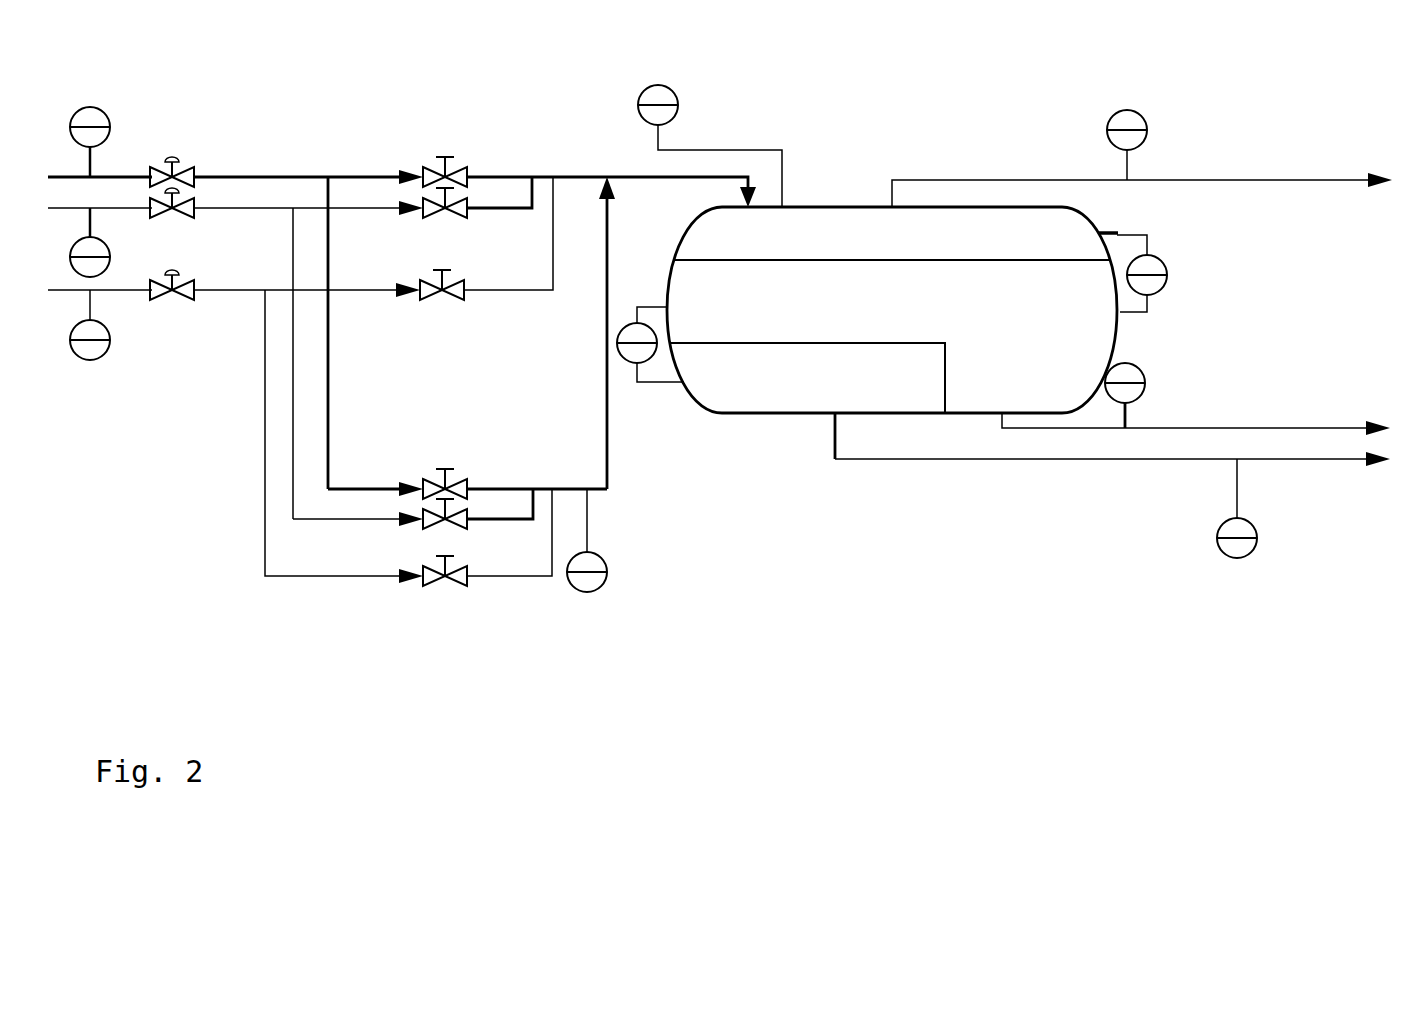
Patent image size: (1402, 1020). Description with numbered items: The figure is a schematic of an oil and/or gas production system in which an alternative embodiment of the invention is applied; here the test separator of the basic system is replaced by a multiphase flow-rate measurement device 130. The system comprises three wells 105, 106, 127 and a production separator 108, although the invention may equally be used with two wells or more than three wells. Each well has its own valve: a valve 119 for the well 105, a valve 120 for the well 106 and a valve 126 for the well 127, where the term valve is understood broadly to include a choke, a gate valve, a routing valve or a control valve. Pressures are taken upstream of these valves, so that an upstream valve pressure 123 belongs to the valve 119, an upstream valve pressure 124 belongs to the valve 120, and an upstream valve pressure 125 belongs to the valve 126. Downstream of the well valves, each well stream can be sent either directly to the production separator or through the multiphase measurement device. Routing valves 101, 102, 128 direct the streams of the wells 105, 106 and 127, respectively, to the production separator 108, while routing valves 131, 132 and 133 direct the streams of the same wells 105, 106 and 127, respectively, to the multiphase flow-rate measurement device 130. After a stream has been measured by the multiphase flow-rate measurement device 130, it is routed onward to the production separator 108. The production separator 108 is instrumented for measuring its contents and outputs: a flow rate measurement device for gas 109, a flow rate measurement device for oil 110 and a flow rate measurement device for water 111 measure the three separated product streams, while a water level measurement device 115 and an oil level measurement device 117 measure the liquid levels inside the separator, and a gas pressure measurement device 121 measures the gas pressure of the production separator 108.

The routing valve 101 is at (503, 161).
The routing valve 102 is at (465, 212).
The well 105 is at (224, 317).
The well 106 is at (224, 363).
The production separator 108 is at (892, 310).
The flow rate measurement device for gas 109 is at (1142, 158).
The flow rate measurement device for oil 110 is at (1196, 399).
The flow rate measurement device for water 111 is at (1112, 485).
The water level measurement device 115 is at (650, 344).
The oil level measurement device 117 is at (1132, 272).
The valve 119 is at (172, 160).
The valve 120 is at (172, 217).
The gas pressure measurement device 121 is at (710, 146).
The upstream valve pressure 123 is at (75, 142).
The upstream valve pressure 124 is at (75, 242).
The upstream valve pressure 125 is at (75, 325).
The valve 126 is at (172, 299).
The well 127 is at (224, 433).
The routing valve 128 is at (474, 251).
The multiphase flow-rate measurement device 130 is at (600, 540).
The routing valve 131 is at (467, 473).
The routing valve 132 is at (413, 520).
The routing valve 133 is at (475, 552).